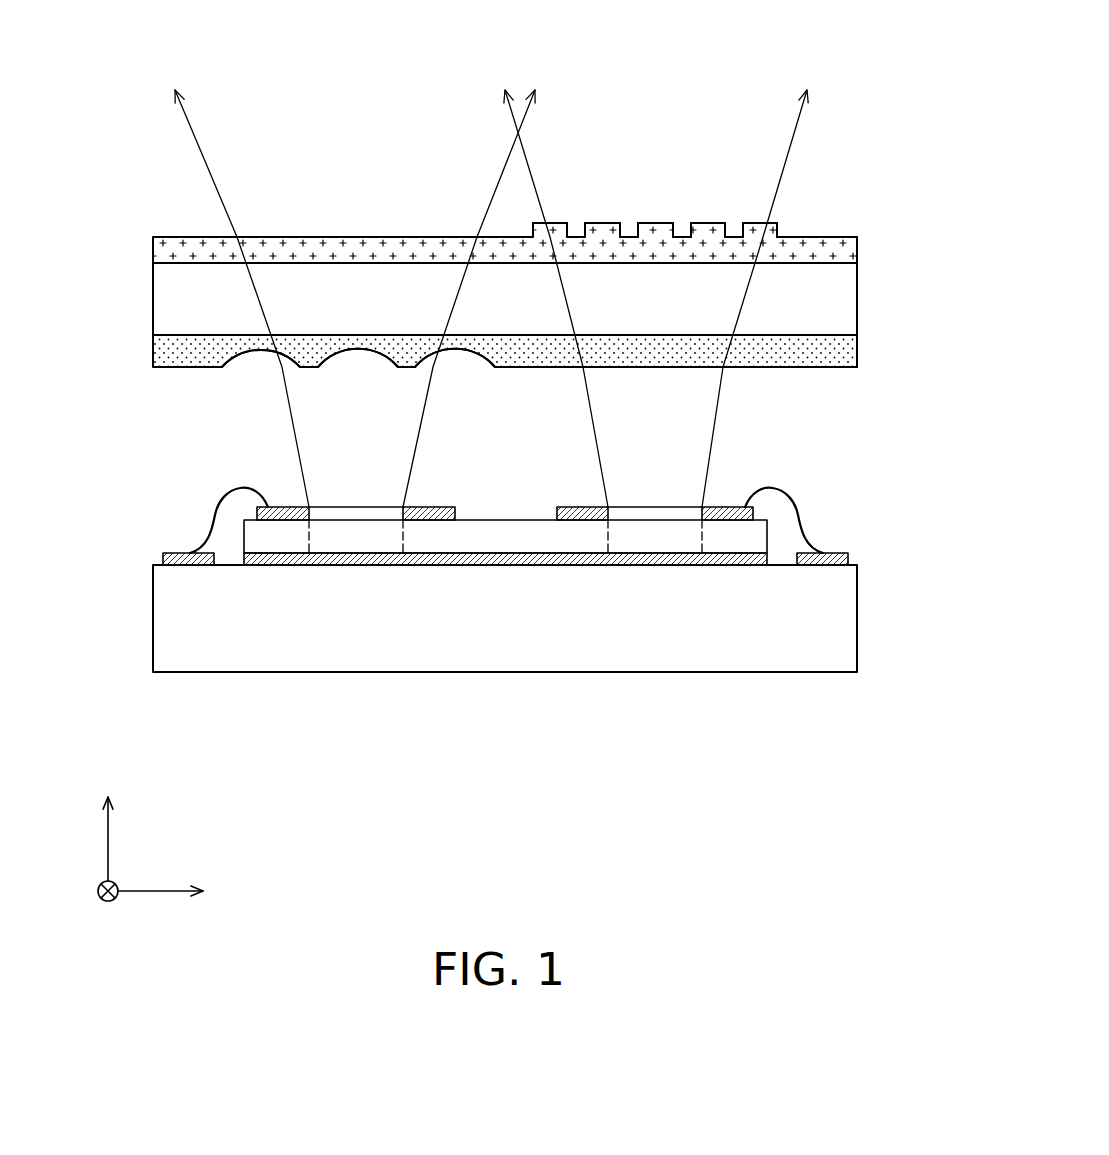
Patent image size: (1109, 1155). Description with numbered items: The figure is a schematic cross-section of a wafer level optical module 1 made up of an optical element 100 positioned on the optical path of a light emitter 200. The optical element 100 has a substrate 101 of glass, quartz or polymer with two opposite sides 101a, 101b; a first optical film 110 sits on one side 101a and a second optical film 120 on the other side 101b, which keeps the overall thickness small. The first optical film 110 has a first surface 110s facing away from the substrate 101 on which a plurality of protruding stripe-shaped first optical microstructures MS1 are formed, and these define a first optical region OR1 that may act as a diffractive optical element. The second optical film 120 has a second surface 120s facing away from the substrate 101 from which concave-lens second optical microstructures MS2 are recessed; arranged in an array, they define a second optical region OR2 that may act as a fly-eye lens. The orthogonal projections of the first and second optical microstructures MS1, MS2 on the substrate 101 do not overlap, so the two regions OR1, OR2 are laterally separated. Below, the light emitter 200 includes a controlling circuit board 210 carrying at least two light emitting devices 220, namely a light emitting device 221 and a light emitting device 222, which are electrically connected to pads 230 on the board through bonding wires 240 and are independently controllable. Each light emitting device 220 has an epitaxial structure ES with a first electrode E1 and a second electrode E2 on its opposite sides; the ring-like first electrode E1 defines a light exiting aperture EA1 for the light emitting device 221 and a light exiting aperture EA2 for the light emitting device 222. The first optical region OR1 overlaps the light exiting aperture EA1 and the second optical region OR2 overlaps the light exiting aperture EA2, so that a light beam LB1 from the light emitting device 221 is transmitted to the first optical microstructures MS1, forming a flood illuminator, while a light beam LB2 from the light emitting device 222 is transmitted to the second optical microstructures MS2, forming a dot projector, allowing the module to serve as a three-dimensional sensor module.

The wafer level optical module 1 is at (888, 880).
The optical element 100 is at (930, 240).
The substrate 101 is at (499, 297).
The side of the substrate 101a is at (186, 258).
The side of the substrate 101b is at (185, 340).
The first optical film 110 is at (544, 212).
The first surface 110s is at (828, 234).
The second optical film 120 is at (545, 379).
The second surface 120s is at (828, 370).
The first optical microstructures MS1 is at (703, 221).
The second optical microstructures MS2 is at (242, 358).
The light beam LB1 is at (716, 418).
The light beam LB2 is at (418, 420).
The first optical region OR1 is at (778, 53).
The second optical region OR2 is at (490, 53).
The light emitter 200 is at (130, 611).
The controlling circuit board 210 is at (840, 630).
The light emitting devices 220 is at (515, 677).
The light emitting device 221 is at (660, 580).
The light emitting device 222 is at (355, 580).
The pads 230 is at (838, 560).
The bonding wires 240 is at (805, 532).
The first electrode E1 is at (557, 514).
The second electrode E2 is at (532, 560).
The epitaxial structure ES is at (475, 542).
The light exiting aperture EA1 is at (658, 513).
The light exiting aperture EA2 is at (358, 513).